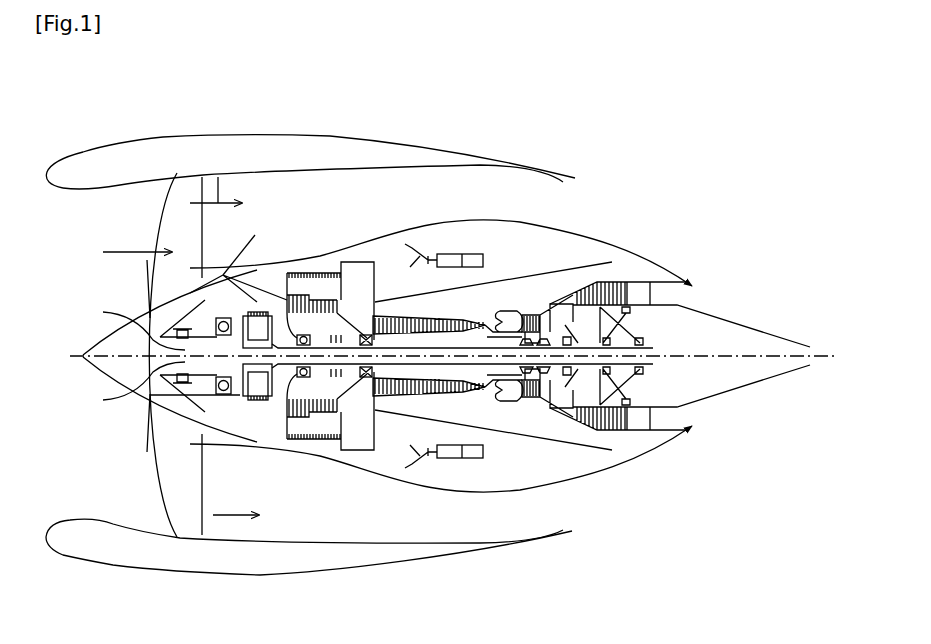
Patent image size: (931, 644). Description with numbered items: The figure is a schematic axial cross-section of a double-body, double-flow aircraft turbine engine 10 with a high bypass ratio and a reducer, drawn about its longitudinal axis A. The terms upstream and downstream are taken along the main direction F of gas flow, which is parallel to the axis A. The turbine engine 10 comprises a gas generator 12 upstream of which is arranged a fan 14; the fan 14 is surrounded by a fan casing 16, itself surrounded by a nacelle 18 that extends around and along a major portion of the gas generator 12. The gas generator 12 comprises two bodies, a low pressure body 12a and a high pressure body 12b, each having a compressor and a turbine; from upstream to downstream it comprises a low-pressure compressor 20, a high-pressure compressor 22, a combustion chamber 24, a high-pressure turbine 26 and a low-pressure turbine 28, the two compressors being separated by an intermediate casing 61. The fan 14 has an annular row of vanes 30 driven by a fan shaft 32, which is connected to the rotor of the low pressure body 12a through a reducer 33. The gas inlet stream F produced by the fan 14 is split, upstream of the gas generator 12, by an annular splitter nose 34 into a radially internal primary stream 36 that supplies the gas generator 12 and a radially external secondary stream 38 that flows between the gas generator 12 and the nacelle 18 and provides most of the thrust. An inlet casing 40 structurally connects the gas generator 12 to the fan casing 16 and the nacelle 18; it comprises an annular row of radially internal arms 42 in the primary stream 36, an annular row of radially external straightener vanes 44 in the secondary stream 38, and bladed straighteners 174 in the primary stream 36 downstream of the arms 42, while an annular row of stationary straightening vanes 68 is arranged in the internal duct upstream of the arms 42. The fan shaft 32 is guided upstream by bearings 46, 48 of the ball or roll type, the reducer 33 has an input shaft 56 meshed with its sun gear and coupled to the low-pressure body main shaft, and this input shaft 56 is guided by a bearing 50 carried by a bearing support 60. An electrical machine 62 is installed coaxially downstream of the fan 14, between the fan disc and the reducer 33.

The turbine engine 10 is at (684, 166).
The gas generator 12 is at (369, 247).
The low pressure body 12a is at (328, 395).
The high pressure body 12b is at (461, 401).
The fan 14 is at (147, 505).
The fan casing 16 is at (178, 537).
The nacelle 18 is at (123, 153).
The low-pressure compressor 20 is at (372, 400).
The high-pressure compressor 22 is at (396, 405).
The combustion chamber 24 is at (508, 308).
The high-pressure turbine 26 is at (533, 310).
The low-pressure turbine 28 is at (607, 278).
The vanes 30 is at (183, 183).
The fan shaft 32 is at (103, 312).
The reducer 33 is at (247, 437).
The annular splitter nose 34 is at (235, 438).
The primary stream 36 is at (228, 428).
The secondary stream 38 is at (223, 275).
The inlet casing 40 is at (267, 246).
The radially internal arms 42 is at (285, 450).
The radially external straightener vanes 44 is at (290, 264).
The bearing 46 is at (178, 382).
The bearing 48 is at (213, 385).
The bearing 50 is at (305, 423).
The input shaft 56 is at (223, 275).
The bearing support 60 is at (327, 268).
The intermediate casing 61 is at (378, 290).
The electrical machine 62 is at (242, 424).
The stationary straightening vanes 68 is at (200, 288).
The bladed straighteners 174 is at (290, 268).
The longitudinal axis A is at (760, 357).
The main direction of flow F is at (130, 250).